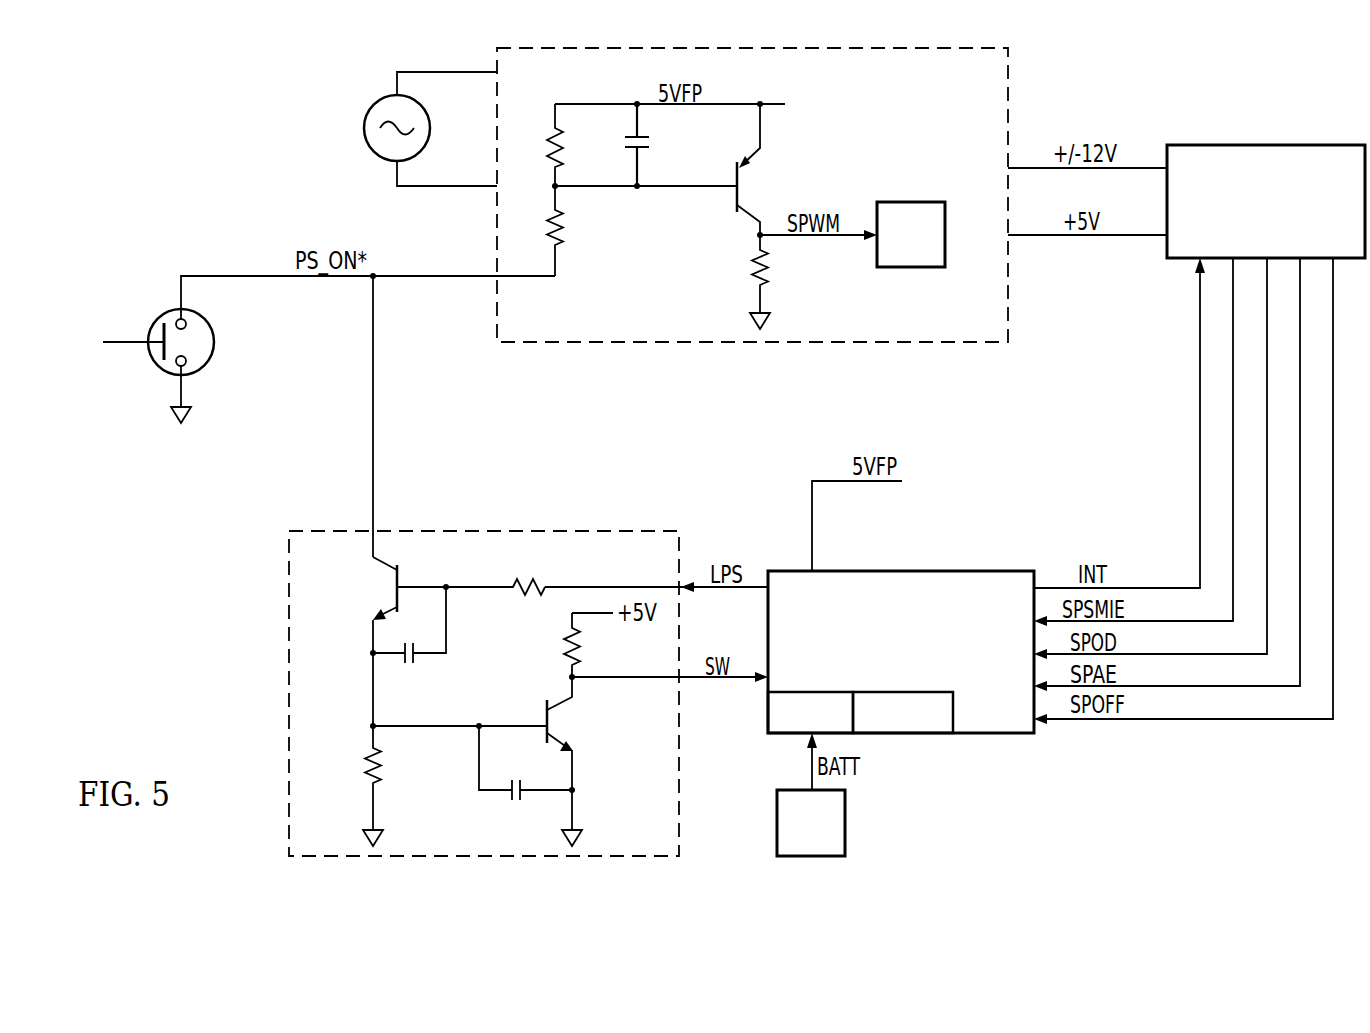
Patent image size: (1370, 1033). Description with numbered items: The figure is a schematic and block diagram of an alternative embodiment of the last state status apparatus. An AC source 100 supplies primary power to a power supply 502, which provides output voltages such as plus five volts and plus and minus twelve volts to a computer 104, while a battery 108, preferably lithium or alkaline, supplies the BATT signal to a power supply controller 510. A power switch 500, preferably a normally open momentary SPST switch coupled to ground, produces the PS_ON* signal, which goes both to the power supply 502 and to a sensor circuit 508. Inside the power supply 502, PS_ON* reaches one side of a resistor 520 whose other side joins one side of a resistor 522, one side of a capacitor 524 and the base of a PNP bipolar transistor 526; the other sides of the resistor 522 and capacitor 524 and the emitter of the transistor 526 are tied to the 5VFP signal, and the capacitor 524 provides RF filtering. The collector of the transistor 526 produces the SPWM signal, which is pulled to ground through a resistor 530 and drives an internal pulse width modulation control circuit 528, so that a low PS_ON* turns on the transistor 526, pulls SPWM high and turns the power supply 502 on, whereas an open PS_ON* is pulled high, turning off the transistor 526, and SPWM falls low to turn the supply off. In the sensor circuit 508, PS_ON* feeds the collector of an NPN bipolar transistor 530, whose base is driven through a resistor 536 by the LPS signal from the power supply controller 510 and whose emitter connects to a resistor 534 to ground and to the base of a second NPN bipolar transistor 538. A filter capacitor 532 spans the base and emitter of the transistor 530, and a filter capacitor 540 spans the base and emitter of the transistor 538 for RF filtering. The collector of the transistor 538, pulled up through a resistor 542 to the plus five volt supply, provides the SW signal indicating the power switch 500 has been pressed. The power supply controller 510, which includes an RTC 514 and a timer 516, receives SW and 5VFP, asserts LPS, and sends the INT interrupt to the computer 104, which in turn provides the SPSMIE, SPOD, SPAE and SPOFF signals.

The AC source 100 is at (372, 112).
The computer 104 is at (1325, 143).
The battery 108 is at (846, 845).
The power switch 500 is at (152, 322).
The power supply 502 is at (528, 47).
The sensor circuit 508 is at (320, 530).
The power supply controller 510 is at (1000, 568).
The RTC 514 is at (767, 715).
The timer 516 is at (939, 735).
The resistor 520 is at (571, 222).
The resistor 522 is at (566, 154).
The capacitor 524 is at (643, 136).
The PNP bipolar transistor 526 is at (733, 175).
The pulse width modulation control circuit 528 is at (915, 200).
The resistor / NPN bipolar transistor 530 is at (757, 262).
The filter capacitor 532 is at (422, 660).
The resistor 534 is at (360, 757).
The resistor 536 is at (523, 598).
The NPN bipolar transistor 538 is at (543, 713).
The filter capacitor 540 is at (510, 797).
The resistor 542 is at (557, 657).